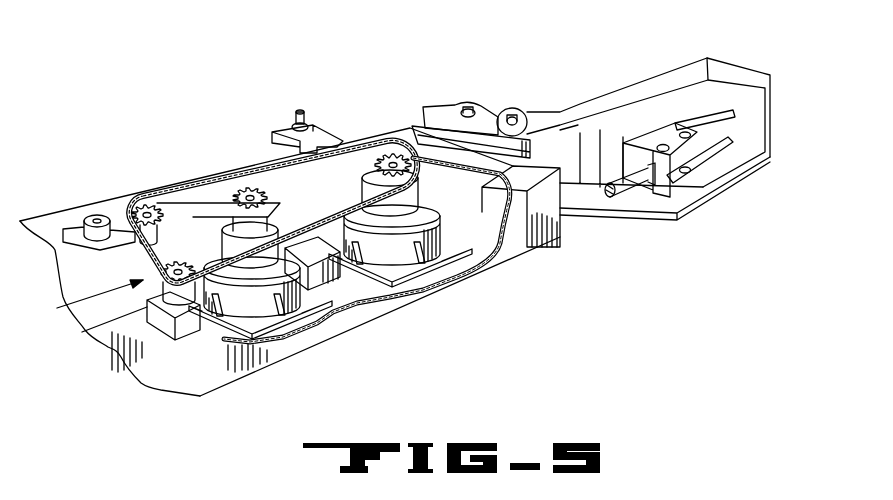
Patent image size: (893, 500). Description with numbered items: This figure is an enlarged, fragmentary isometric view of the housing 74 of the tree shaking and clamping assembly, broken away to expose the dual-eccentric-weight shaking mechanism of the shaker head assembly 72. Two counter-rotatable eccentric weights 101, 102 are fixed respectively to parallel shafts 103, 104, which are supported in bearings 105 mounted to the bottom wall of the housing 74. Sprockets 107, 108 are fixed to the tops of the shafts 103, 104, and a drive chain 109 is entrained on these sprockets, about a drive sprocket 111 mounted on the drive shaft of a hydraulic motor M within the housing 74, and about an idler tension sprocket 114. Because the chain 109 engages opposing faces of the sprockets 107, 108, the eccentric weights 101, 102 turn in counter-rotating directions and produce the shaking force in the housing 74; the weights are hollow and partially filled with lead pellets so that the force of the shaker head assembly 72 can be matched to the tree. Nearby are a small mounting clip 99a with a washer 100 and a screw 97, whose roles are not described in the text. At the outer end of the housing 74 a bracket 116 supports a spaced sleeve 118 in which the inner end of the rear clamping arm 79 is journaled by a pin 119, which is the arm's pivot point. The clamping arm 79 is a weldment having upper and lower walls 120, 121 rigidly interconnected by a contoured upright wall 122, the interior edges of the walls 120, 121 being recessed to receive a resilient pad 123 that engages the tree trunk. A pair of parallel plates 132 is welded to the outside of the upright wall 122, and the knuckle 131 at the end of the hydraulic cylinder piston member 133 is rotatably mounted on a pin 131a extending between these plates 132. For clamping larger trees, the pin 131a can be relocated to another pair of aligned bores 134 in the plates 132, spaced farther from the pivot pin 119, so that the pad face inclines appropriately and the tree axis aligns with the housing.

The housing 74 is at (42, 220).
The shaker head assembly 72 is at (85, 300).
The hydraulic motor M is at (167, 332).
The bearings 105 is at (240, 310).
The eccentric weight 101 is at (325, 272).
The eccentric weight 102 is at (521, 206).
The sleeve 118 is at (525, 163).
The shaft 103 is at (222, 232).
The idler tension sprocket 114 is at (153, 212).
The drive sprocket 111 is at (147, 263).
The sprocket 107 is at (270, 183).
The sprocket 108 is at (392, 155).
The drive chain 109 is at (175, 205).
The shaft 104 is at (433, 168).
The clip bracket 99a is at (280, 130).
The washer 100 is at (297, 123).
The screw 97 is at (300, 111).
The bracket 116 is at (447, 125).
The pin 119 is at (512, 114).
The resilient pad 123 is at (627, 87).
The rear clamping arm 79 is at (688, 125).
The upper wall 120 is at (743, 68).
The lower wall 121 is at (715, 185).
The upright wall 122 is at (736, 113).
The plates 132 is at (734, 148).
The knuckle 131 is at (665, 198).
The pin 131a is at (662, 144).
The bores 134 is at (684, 132).
The piston member 133 is at (619, 200).